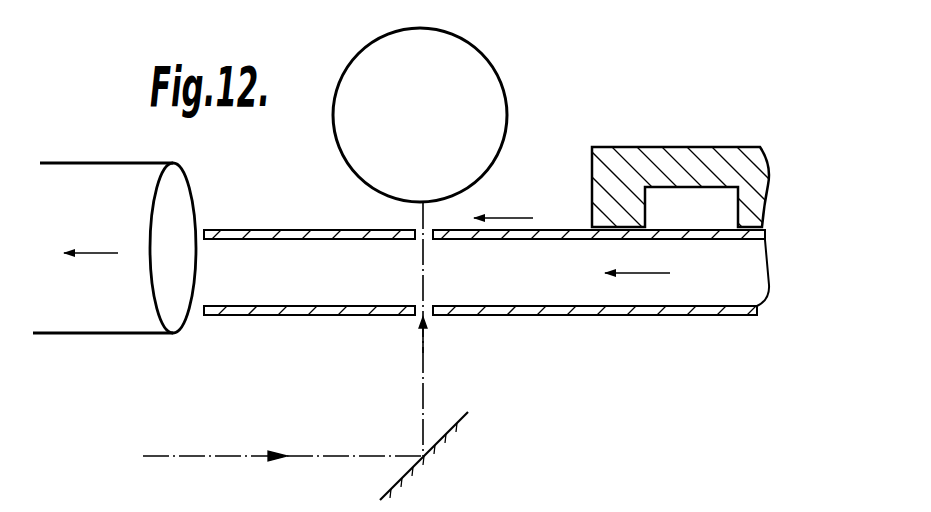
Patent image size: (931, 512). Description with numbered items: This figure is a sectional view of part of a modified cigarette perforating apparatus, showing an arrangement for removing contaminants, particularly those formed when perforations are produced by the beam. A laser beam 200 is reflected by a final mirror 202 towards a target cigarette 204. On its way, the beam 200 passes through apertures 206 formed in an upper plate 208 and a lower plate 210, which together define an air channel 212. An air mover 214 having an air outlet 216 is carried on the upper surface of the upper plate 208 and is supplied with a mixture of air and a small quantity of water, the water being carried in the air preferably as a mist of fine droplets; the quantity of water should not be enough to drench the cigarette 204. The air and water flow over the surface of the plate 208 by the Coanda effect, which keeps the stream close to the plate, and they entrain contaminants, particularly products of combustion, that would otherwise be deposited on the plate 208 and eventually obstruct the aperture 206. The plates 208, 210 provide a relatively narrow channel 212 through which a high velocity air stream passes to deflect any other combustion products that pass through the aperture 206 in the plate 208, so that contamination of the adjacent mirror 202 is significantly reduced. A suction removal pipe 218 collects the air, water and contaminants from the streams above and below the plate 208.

The laser beam 200 is at (422, 388).
The final mirror 202 is at (448, 434).
The target cigarette 204 is at (505, 92).
The apertures 206 is at (416, 228).
The upper plate 208 is at (236, 229).
The lower plate 210 is at (583, 317).
The air channel 212 is at (725, 281).
The air mover 214 is at (712, 152).
The air outlet 216 is at (588, 226).
The suction removal pipe 218 is at (70, 334).